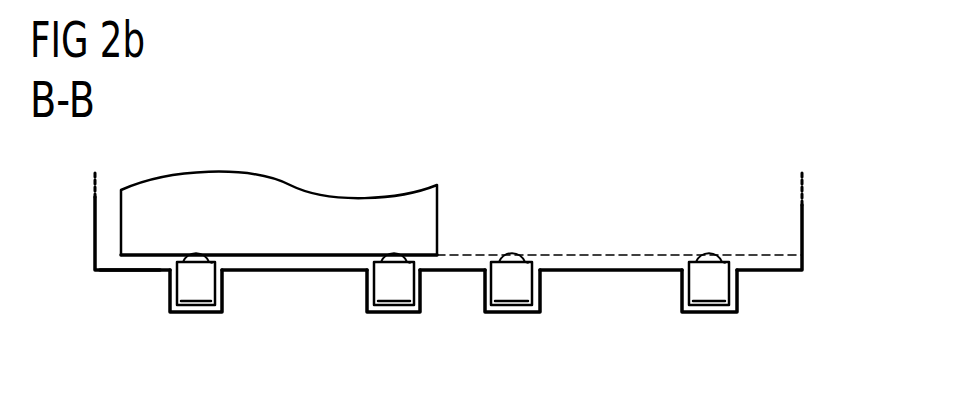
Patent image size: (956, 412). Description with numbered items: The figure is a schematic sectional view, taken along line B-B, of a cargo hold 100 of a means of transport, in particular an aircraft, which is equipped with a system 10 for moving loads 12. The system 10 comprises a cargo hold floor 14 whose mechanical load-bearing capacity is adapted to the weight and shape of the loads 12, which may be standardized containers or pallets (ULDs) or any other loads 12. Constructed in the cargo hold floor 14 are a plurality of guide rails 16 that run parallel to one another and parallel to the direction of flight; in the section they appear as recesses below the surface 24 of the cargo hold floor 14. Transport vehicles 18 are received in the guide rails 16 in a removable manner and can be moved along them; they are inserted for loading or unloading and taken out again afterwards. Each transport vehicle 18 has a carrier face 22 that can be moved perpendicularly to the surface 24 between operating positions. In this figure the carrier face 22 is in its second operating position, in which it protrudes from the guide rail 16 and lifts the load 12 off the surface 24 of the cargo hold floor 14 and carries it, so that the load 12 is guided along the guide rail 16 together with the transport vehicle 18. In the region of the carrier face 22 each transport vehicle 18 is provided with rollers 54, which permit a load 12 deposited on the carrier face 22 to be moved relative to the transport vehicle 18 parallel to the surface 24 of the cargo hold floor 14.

The cargo hold 100 is at (813, 202).
The system for moving loads 10 is at (790, 233).
The load 12 is at (130, 229).
The cargo hold floor 14 is at (777, 272).
The guide rail 16 is at (223, 290).
The transport vehicle 18 is at (198, 290).
The carrier face 22 is at (212, 262).
The surface of the cargo hold floor 24 is at (130, 272).
The roller 54 is at (195, 257).